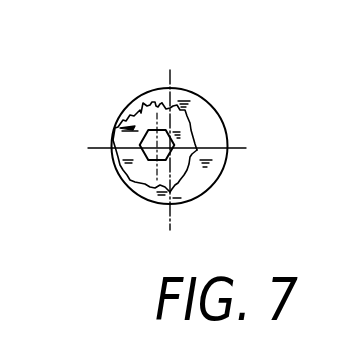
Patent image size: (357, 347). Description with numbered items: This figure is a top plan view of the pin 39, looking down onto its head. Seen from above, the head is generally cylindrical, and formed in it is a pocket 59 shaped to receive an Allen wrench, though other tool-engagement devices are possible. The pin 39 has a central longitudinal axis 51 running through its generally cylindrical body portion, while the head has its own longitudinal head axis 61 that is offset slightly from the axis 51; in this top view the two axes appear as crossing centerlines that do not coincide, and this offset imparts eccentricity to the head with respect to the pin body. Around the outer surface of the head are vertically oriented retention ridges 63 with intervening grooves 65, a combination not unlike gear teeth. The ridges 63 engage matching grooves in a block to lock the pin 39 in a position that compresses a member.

The pin 39 is at (223, 122).
The central longitudinal axis 51 is at (156, 138).
The pocket 59 is at (145, 140).
The longitudinal head axis 61 is at (176, 136).
The retention ridges 63 is at (185, 110).
The grooves 65 is at (150, 106).